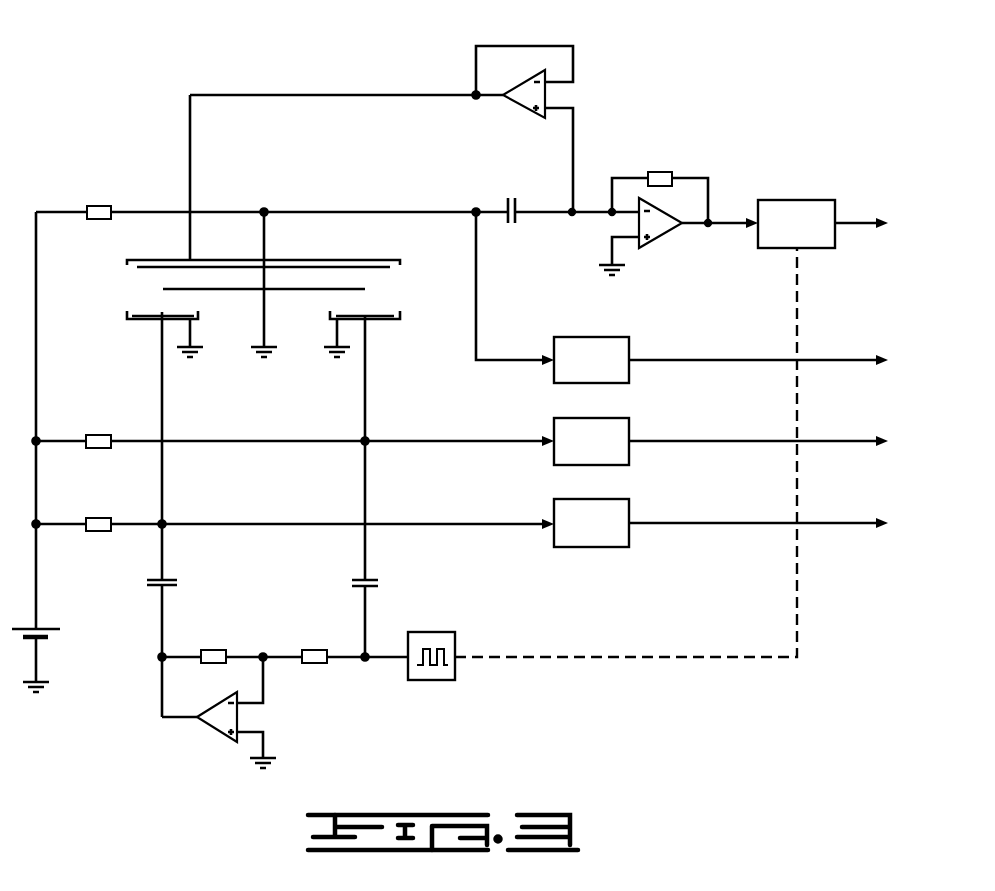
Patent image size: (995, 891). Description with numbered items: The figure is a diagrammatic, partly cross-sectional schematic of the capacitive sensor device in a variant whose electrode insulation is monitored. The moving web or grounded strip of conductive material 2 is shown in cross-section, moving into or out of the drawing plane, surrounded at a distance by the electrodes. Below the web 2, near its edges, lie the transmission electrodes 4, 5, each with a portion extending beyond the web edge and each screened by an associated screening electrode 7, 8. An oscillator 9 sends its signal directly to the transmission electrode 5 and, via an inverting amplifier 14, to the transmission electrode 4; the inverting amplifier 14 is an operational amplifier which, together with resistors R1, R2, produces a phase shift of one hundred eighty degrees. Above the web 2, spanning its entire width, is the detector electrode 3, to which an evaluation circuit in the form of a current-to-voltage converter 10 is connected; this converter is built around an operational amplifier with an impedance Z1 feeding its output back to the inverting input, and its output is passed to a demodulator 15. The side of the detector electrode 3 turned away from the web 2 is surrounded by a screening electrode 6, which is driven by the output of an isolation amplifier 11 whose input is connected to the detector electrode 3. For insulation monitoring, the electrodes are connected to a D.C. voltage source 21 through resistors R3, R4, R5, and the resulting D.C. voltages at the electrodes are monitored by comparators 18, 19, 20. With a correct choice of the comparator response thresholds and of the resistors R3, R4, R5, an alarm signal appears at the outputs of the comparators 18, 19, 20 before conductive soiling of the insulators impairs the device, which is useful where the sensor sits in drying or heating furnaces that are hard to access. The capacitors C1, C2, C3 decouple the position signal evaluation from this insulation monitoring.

The web 2 is at (172, 288).
The detector electrode 3 is at (390, 268).
The transmission electrode 4 is at (140, 312).
The transmission electrode 5 is at (385, 309).
The screening electrode 6 is at (335, 258).
The screening electrode 7 is at (140, 320).
The screening electrode 8 is at (385, 320).
The oscillator 9 is at (440, 675).
The current-to-voltage converter 10 is at (652, 220).
The isolation amplifier 11 is at (525, 97).
The inverting amplifier 14 is at (212, 722).
The demodulator 15 is at (800, 218).
The comparator 18 is at (603, 355).
The comparator 19 is at (603, 436).
The comparator 20 is at (603, 518).
The D.C. voltage source 21 is at (55, 635).
The resistor R1 is at (208, 645).
The resistor R2 is at (308, 645).
The resistor R3 is at (95, 512).
The resistor R4 is at (95, 430).
The resistor R5 is at (95, 199).
The capacitor C1 is at (564, 197).
The capacitor C2 is at (182, 586).
The capacitor C3 is at (336, 585).
The impedance Z1 is at (660, 184).